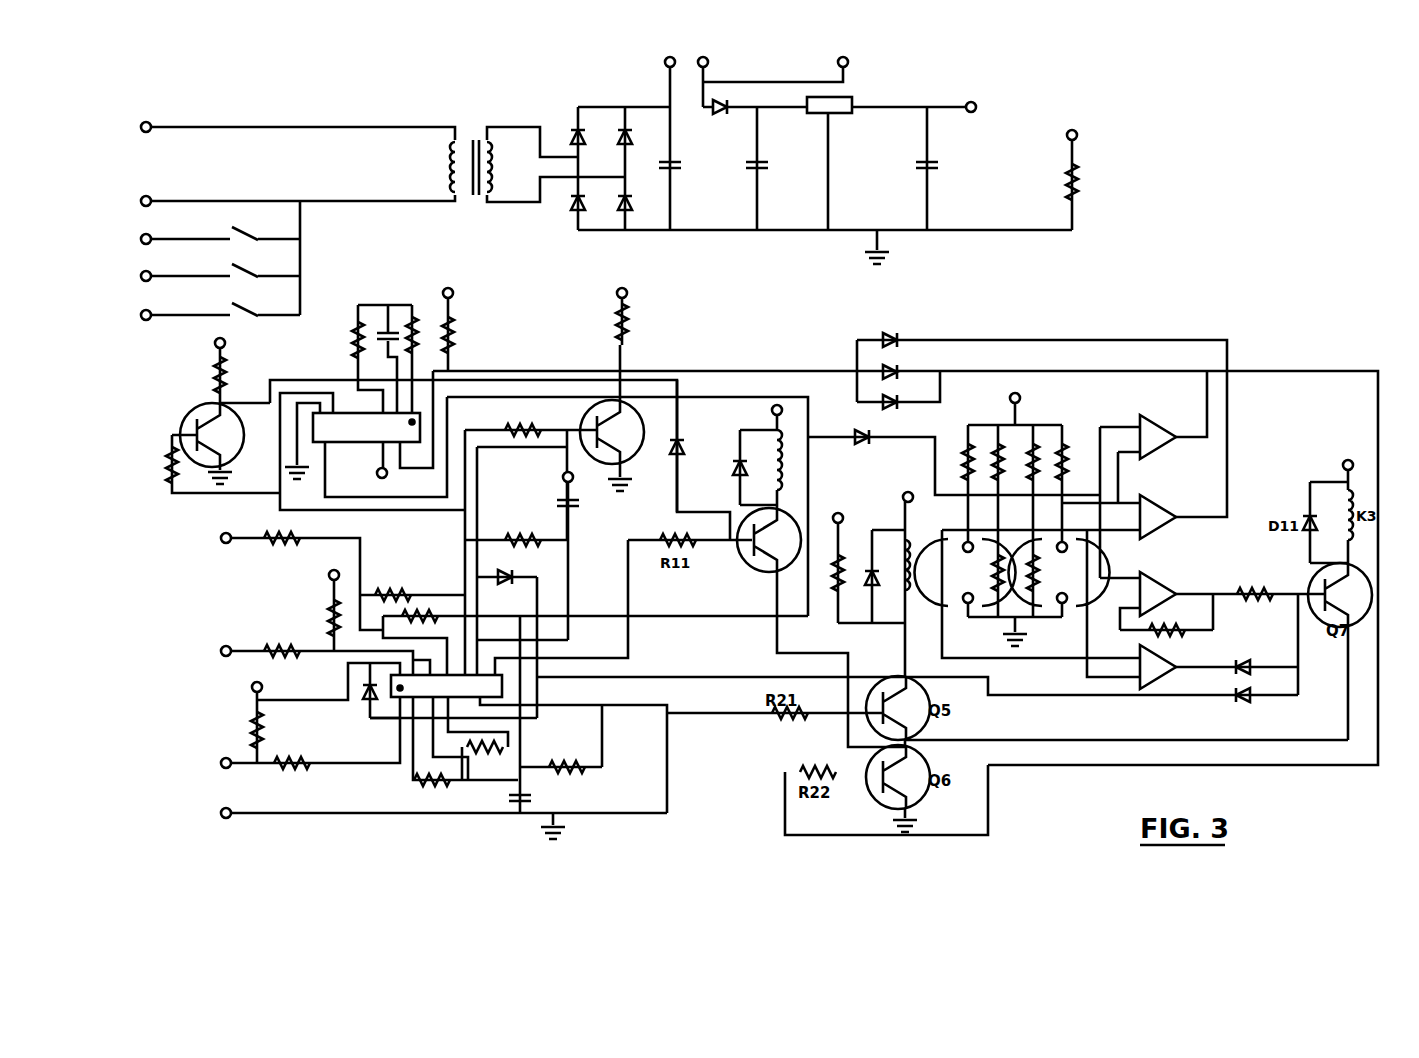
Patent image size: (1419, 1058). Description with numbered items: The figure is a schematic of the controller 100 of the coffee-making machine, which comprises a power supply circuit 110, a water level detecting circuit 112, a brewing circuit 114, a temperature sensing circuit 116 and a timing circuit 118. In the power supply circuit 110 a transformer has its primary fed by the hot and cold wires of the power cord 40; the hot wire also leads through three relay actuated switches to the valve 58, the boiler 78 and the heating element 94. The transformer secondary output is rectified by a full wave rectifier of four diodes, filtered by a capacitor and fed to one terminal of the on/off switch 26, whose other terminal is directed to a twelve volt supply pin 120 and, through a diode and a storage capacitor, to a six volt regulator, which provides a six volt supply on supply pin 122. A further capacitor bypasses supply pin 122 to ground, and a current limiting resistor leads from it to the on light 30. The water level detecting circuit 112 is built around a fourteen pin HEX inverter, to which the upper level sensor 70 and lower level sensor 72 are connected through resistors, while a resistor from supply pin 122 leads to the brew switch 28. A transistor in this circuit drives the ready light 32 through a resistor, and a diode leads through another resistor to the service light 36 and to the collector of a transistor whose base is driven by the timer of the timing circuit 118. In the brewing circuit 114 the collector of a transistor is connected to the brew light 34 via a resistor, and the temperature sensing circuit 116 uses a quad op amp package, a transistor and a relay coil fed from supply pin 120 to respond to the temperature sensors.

The on/off switch 26 is at (723, 62).
The brew switch 28 is at (366, 740).
The on light 30 is at (1078, 131).
The ready light 32 is at (628, 291).
The brew light 34 is at (845, 517).
The service light 36 is at (214, 351).
The power cord 40 is at (351, 120).
The valve 58 is at (172, 227).
The upper level sensor 70 is at (248, 633).
The lower level sensor 72 is at (281, 595).
The boiler 78 is at (174, 263).
The heating element 94 is at (185, 311).
The controller 100 is at (1220, 194).
The power supply circuit 110 is at (948, 76).
The water level detecting circuit 112 is at (396, 825).
The brewing circuit 114 is at (805, 635).
The temperature sensing circuit 116 is at (1124, 392).
The timing circuit 118 is at (497, 357).
The 12 dc volt supply pin 120 is at (848, 62).
The 6 dc volt supply pin 122 is at (977, 103).